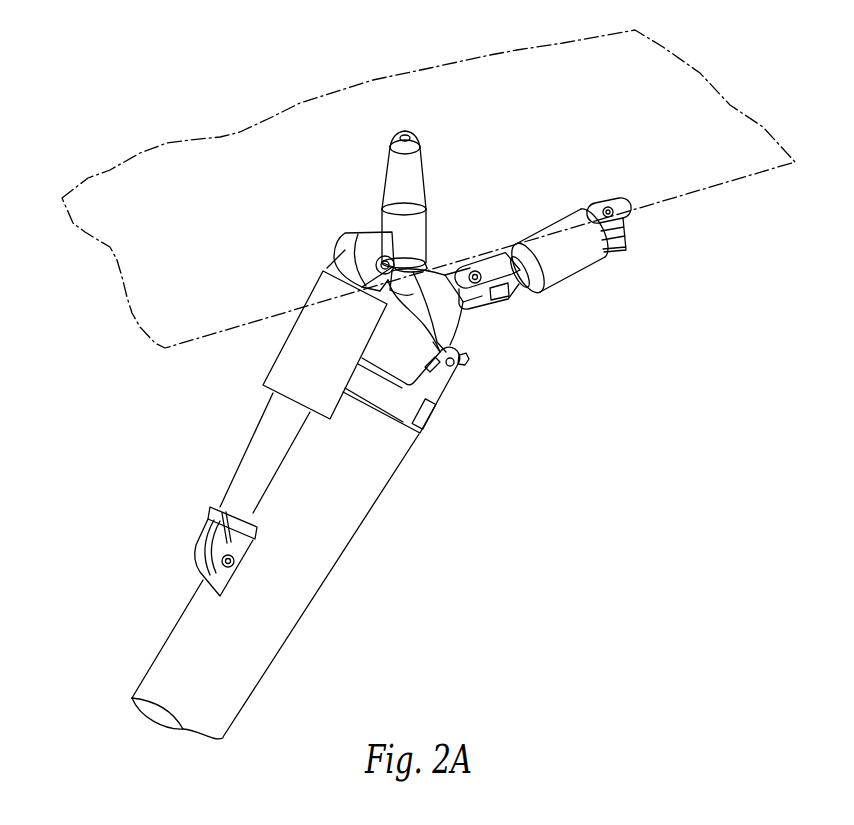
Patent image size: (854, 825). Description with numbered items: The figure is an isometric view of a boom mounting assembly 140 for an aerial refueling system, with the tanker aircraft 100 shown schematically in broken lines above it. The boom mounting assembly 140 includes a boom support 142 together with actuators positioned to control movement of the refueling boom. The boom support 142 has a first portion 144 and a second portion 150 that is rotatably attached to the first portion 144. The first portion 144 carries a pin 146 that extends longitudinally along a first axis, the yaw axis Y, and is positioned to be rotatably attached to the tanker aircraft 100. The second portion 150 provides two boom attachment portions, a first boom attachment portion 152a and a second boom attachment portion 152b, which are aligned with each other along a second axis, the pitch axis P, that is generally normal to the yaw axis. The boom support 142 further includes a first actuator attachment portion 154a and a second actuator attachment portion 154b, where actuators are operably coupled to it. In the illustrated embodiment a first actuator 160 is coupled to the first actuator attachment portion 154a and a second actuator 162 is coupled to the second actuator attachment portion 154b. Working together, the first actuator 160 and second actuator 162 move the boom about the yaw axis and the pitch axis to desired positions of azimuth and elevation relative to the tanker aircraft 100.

The tanker aircraft 100 is at (128, 318).
The boom mounting assembly 140 is at (559, 593).
The boom support 142 is at (364, 208).
The first portion 144 is at (383, 170).
The pin 146 is at (416, 147).
The second portion 150 is at (462, 314).
The first boom attachment portion 152a is at (478, 370).
The second boom attachment portion 152b is at (385, 313).
The first actuator attachment portion 154a is at (340, 238).
The second actuator attachment portion 154b is at (508, 308).
The first actuator 160 is at (297, 349).
The second actuator 162 is at (550, 244).